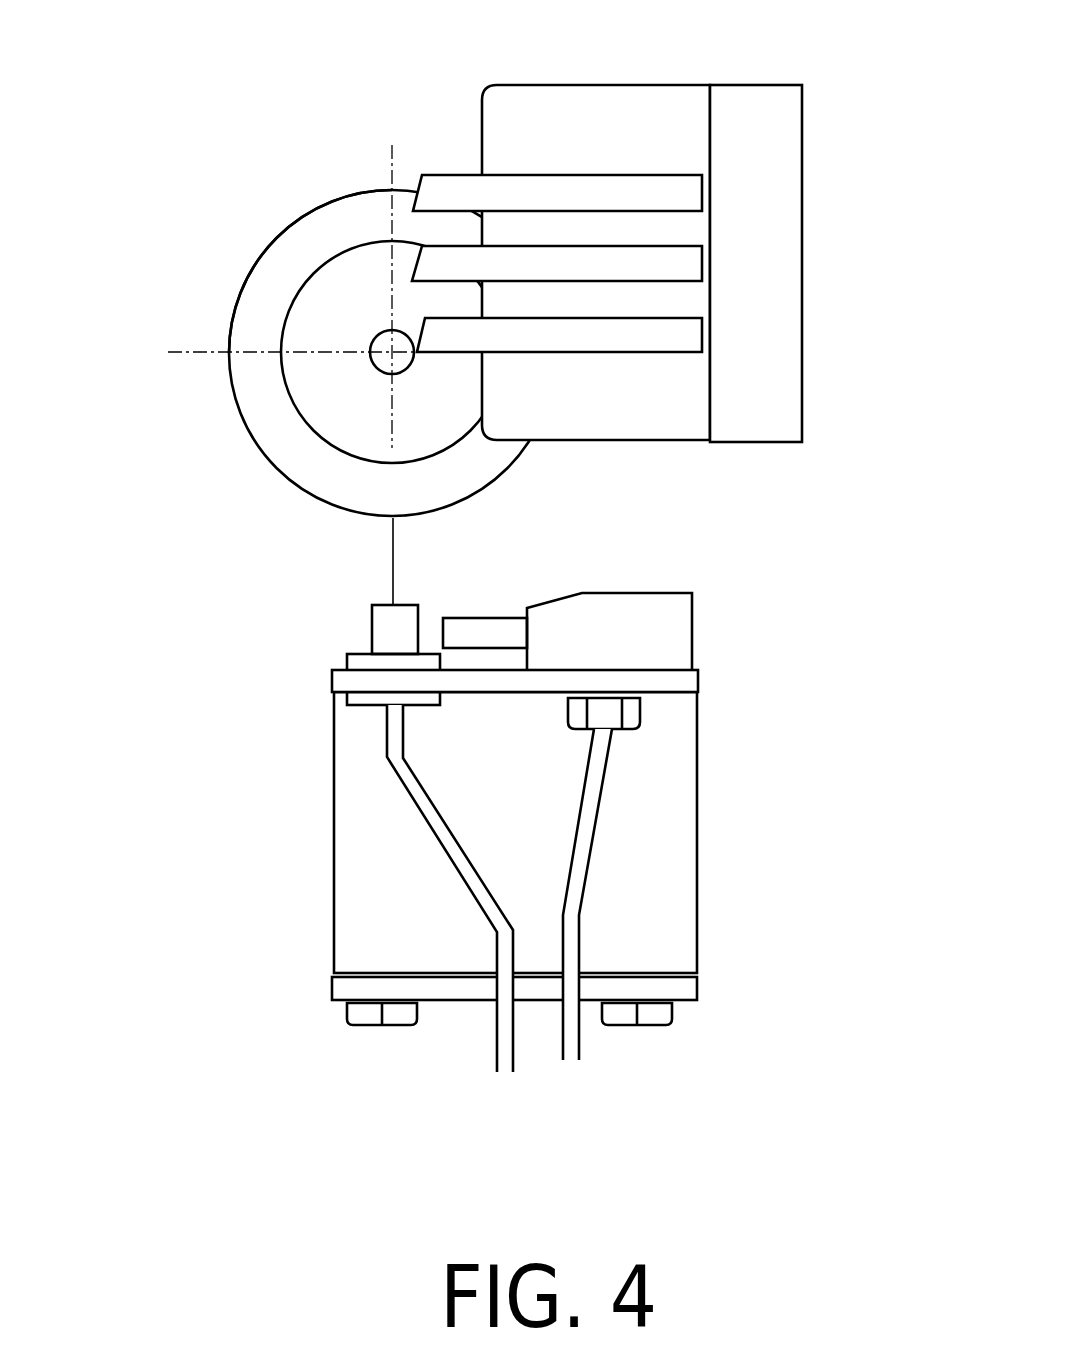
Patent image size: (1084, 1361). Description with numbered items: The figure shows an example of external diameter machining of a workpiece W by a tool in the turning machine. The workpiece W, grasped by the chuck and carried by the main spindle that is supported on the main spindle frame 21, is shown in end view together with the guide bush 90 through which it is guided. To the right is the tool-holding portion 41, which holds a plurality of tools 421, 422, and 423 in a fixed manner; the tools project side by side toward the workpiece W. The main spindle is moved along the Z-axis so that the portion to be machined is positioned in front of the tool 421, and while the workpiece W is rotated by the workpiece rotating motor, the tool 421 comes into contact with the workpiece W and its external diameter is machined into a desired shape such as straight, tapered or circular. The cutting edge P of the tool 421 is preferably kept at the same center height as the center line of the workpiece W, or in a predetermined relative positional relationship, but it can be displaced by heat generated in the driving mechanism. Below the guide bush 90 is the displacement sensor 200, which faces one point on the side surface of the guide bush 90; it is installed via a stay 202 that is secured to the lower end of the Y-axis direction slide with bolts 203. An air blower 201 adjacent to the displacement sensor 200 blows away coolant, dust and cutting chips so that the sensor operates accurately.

The tool-holding portion 41 is at (742, 98).
The tool 421 is at (533, 353).
The tool 422 is at (465, 263).
The tool 423 is at (527, 197).
The workpiece W is at (343, 297).
The guide bush 90 is at (298, 413).
The main spindle frame 21 is at (302, 495).
The cutting edge P is at (412, 373).
The displacement sensor 200 is at (362, 623).
The air blower 201 is at (692, 623).
The stay 202 is at (683, 827).
The bolt 203 is at (345, 1013).